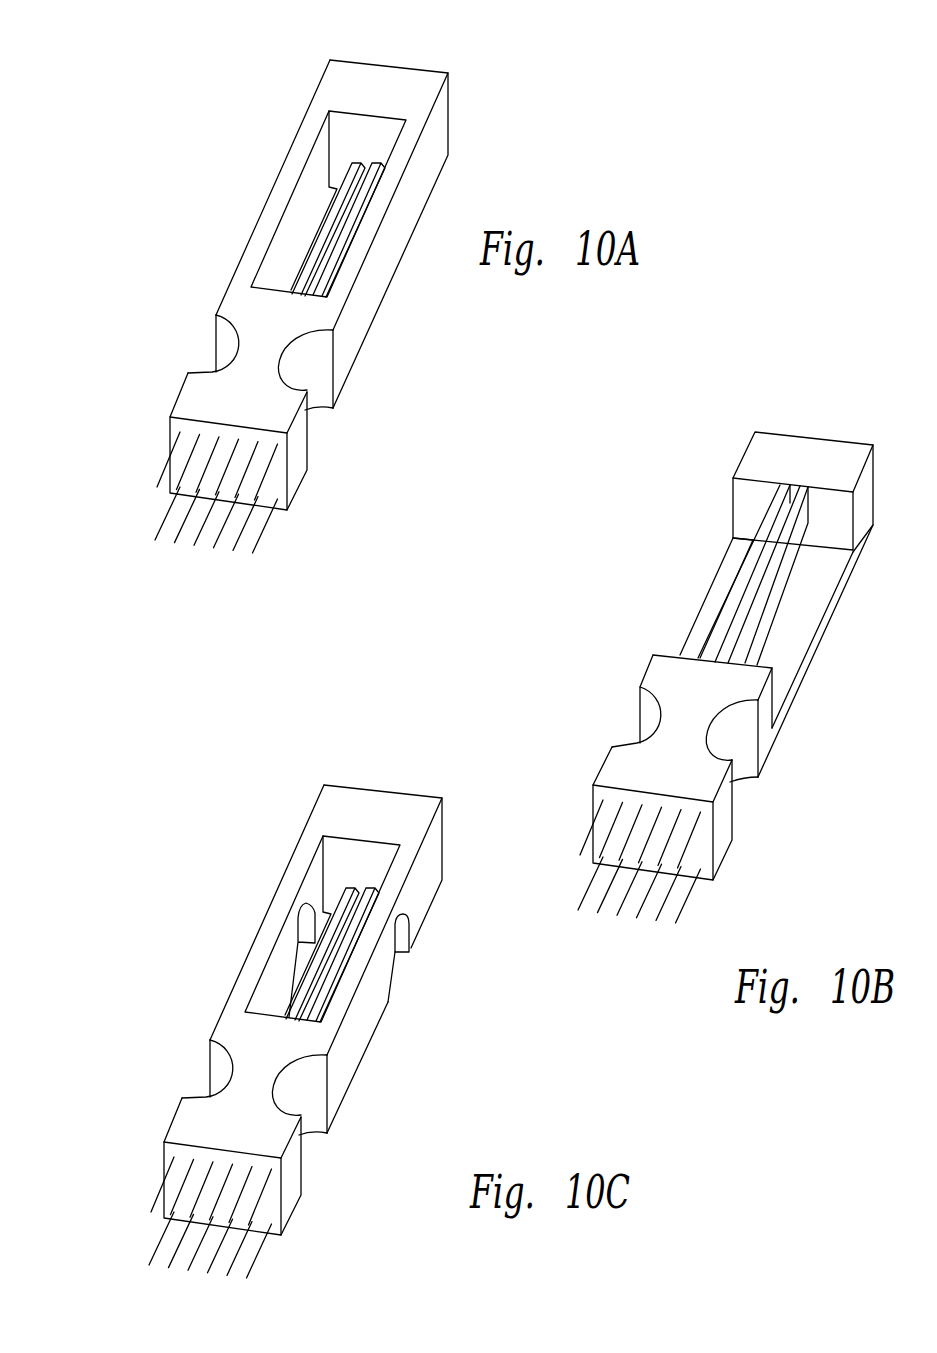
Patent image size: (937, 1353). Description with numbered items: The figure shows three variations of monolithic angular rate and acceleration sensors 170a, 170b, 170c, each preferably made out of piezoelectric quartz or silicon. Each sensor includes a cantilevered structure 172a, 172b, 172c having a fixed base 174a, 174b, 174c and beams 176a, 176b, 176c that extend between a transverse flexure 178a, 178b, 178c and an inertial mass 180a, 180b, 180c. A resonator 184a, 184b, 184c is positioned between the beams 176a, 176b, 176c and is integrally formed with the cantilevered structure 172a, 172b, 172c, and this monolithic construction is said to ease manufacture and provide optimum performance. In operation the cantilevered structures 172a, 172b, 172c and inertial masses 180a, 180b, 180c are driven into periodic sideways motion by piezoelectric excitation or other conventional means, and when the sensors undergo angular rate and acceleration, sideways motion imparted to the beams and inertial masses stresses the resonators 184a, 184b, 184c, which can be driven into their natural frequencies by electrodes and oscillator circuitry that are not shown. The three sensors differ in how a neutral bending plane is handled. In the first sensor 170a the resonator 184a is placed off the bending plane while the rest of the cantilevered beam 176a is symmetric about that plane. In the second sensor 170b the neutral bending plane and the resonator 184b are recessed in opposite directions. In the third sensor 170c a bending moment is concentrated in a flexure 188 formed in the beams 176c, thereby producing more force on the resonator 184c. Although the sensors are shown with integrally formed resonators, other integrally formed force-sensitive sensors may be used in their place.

In FIG. 10A, the angular rate and acceleration sensor 170a is at (177, 155).
In FIG. 10A, the cantilevered structure 172a is at (240, 297).
In FIG. 10A, the fixed base 174a is at (262, 410).
In FIG. 10A, the beam 176a is at (315, 118).
In FIG. 10A, the transverse flexure 178a is at (262, 348).
In FIG. 10A, the inertial mass 180a is at (382, 85).
In FIG. 10A, the resonator 184a is at (320, 248).
In FIG. 10B, the angular rate and acceleration sensor 170b is at (598, 522).
In FIG. 10B, the cantilevered structure 172b is at (663, 668).
In FIG. 10B, the fixed base 174b is at (687, 780).
In FIG. 10B, the beam 176b is at (728, 570).
In FIG. 10B, the transverse flexure 178b is at (685, 720).
In FIG. 10B, the inertial mass 180b is at (807, 457).
In FIG. 10B, the resonator 184b is at (732, 602).
In FIG. 10C, the angular rate and acceleration sensor 170c is at (279, 1007).
In FIG. 10C, the cantilevered structure 172c is at (187, 1044).
In FIG. 10C, the fixed base 174c is at (276, 1188).
In FIG. 10C, the beam 176c is at (309, 915).
In FIG. 10C, the transverse flexure 178c is at (344, 1086).
In FIG. 10C, the inertial mass 180c is at (326, 935).
In FIG. 10C, the resonator 184c is at (279, 955).
In FIG. 10C, the flexure 188 is at (443, 946).